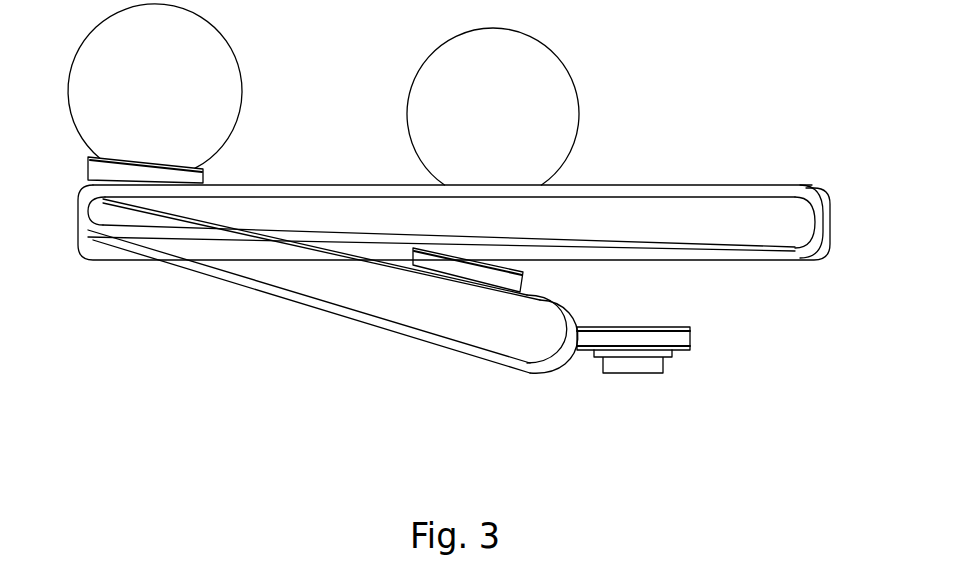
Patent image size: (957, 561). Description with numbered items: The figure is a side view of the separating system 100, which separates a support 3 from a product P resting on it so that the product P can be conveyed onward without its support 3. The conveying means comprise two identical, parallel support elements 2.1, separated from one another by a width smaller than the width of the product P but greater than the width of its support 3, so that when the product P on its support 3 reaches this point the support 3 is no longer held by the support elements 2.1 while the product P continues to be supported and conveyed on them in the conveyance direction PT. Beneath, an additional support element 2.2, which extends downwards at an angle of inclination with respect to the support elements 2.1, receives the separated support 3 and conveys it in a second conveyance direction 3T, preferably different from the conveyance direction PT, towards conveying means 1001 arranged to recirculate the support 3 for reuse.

The separating system 100 is at (683, 78).
The support element 2.1 is at (700, 195).
The additional support element 2.2 is at (317, 300).
The support 3 is at (188, 177).
The conveying means 1001 is at (643, 363).
The product P is at (420, 100).
The conveyance direction PT is at (781, 275).
The second conveyance direction 3T is at (510, 382).